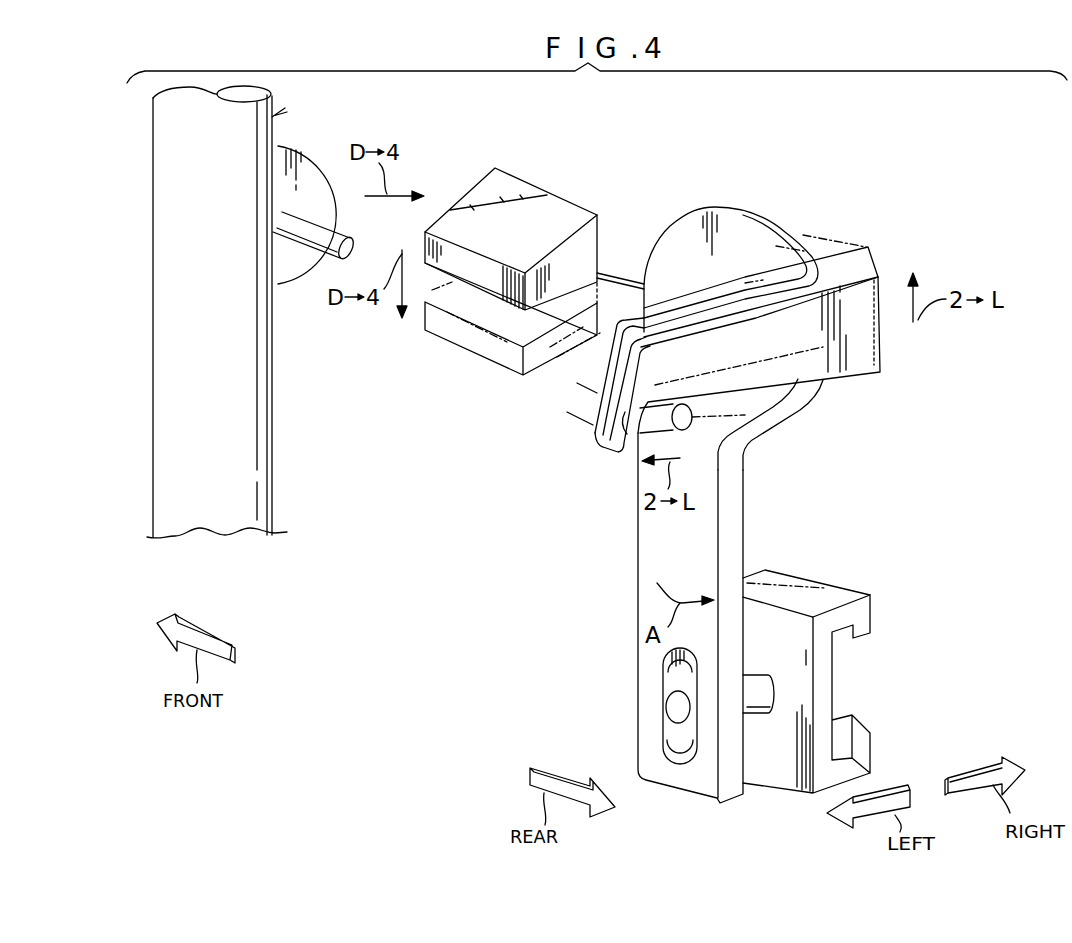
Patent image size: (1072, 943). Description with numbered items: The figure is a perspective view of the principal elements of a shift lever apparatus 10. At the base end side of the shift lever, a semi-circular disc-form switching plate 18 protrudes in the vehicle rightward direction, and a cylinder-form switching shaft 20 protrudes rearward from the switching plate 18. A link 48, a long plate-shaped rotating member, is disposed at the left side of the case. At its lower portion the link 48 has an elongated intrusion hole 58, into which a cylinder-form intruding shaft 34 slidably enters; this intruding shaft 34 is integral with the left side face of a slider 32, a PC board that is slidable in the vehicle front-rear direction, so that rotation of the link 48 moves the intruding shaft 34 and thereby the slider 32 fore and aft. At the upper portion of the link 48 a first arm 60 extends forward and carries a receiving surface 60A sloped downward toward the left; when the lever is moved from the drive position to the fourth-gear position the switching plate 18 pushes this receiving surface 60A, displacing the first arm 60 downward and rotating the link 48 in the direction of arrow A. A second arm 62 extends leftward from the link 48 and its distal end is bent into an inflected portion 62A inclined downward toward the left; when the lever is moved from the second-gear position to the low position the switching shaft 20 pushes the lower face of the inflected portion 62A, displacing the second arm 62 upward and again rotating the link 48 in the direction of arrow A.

The shift lever apparatus 10 is at (1015, 148).
The switching plate 18 is at (318, 156).
The switching shaft 20 is at (300, 257).
The slider 32 is at (768, 745).
The intruding shaft 34 is at (669, 699).
The link 48 is at (711, 203).
The intrusion hole 58 is at (667, 736).
The first arm 60 is at (623, 278).
The receiving surface 60A is at (520, 190).
The second arm 62 is at (858, 378).
The inflected portion 62A is at (597, 438).